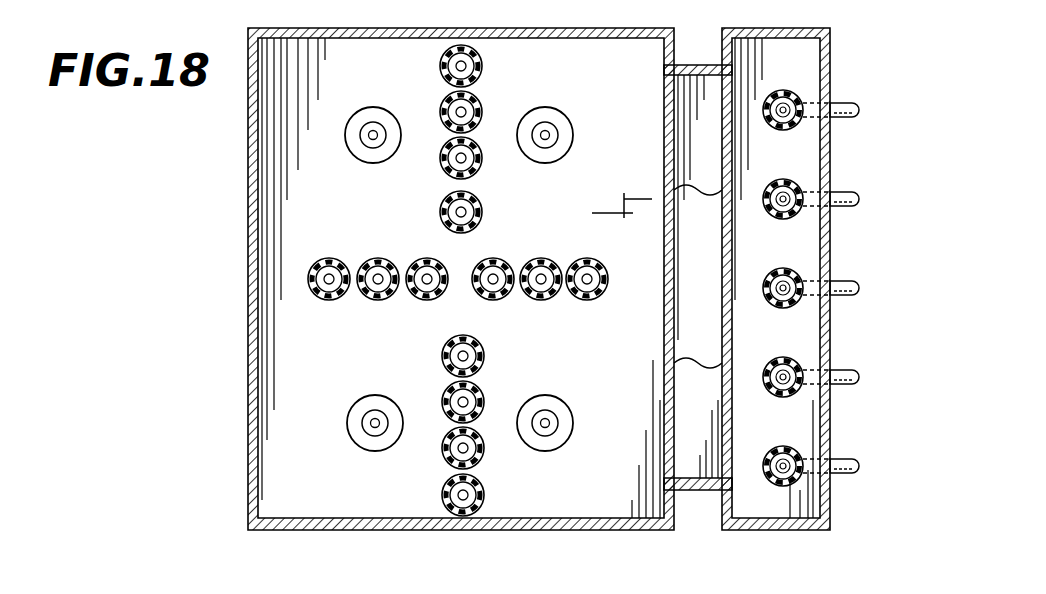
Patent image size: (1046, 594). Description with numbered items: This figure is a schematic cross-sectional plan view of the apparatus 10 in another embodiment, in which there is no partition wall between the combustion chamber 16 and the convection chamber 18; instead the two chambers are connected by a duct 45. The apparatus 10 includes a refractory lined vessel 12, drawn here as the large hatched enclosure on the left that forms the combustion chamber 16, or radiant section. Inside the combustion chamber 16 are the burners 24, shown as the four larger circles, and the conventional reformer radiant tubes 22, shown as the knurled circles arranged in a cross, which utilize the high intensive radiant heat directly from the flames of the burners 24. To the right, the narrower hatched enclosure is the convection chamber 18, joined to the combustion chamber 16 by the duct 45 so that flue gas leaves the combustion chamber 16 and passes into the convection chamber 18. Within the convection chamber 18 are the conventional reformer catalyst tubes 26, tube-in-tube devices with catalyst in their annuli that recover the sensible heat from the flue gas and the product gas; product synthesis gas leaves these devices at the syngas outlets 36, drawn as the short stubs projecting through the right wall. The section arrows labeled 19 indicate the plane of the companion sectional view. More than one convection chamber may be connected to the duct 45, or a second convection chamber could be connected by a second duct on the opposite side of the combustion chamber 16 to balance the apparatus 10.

The apparatus 10 is at (228, 378).
The refractory lined vessel 12 is at (248, 278).
The combustion chamber 16 is at (565, 475).
The convection chamber 18 is at (830, 248).
The section line of FIG. 19 is at (190, 223).
The reformer radiant tubes 22 is at (482, 66).
The burners 24 is at (378, 163).
The reformer catalyst tubes 26 is at (796, 98).
The syngas outlets 36 is at (840, 296).
The duct 45 is at (682, 132).